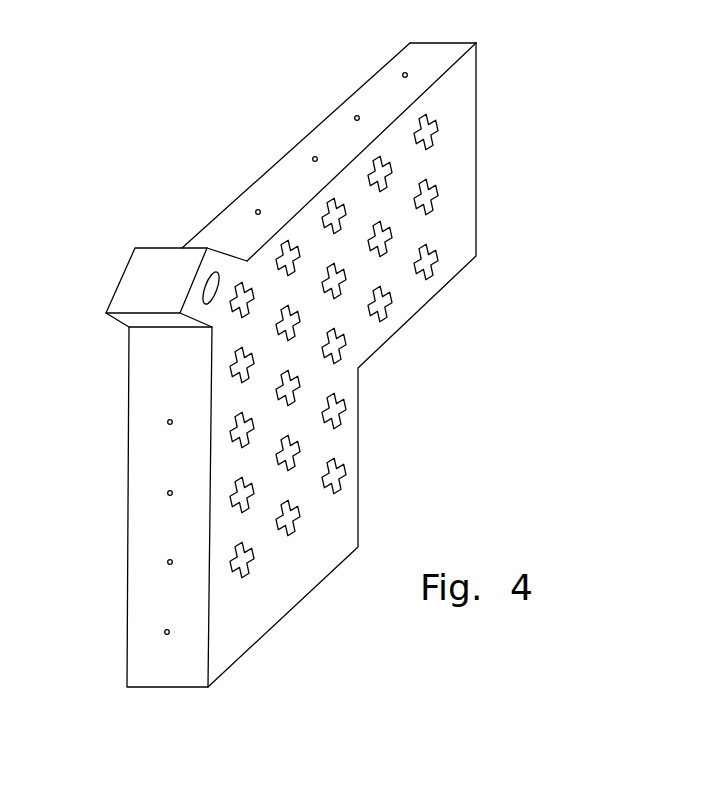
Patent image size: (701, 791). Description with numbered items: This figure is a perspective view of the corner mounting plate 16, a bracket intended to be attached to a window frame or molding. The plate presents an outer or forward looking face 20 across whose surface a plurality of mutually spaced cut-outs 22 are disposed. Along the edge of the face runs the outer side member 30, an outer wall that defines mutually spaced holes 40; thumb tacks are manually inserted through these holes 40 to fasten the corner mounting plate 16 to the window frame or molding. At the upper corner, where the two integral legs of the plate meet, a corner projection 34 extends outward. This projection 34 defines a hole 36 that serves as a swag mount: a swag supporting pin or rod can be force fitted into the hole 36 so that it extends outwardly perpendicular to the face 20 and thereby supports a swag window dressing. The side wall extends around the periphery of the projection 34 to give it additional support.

The corner mounting plate 16 is at (341, 343).
The outer face 20 is at (462, 182).
The cut-outs 22 is at (420, 122).
The outer side member 30 is at (417, 53).
The corner projection 34 is at (146, 273).
The hole 36 is at (204, 273).
The holes 40 is at (315, 159).